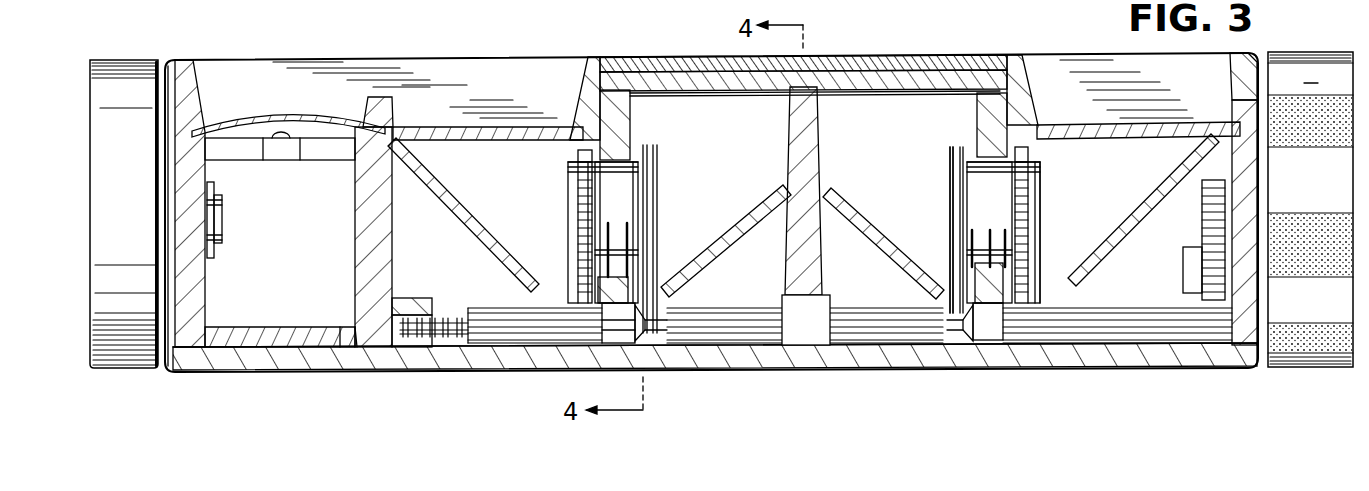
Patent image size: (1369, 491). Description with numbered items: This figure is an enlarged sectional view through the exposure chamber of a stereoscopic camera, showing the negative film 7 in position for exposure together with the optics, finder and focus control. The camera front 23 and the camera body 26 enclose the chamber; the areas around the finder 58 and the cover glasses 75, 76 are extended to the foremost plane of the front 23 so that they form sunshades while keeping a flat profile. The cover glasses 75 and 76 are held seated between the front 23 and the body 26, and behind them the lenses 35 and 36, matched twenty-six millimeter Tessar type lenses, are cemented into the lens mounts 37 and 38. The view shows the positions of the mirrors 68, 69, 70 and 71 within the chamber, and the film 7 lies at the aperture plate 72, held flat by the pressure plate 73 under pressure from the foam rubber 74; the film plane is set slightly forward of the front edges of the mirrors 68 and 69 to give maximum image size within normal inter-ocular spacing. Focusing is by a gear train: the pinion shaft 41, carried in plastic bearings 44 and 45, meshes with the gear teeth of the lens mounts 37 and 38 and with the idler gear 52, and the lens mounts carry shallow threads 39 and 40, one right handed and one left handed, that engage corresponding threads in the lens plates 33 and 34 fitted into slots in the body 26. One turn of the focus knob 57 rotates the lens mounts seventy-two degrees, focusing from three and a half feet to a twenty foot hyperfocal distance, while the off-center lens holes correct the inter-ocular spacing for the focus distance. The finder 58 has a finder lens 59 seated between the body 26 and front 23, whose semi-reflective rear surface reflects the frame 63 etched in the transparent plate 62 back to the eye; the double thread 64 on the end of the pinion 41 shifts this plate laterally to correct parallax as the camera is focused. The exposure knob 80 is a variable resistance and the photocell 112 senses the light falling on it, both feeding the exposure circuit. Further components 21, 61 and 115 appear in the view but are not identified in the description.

The negative film 7 is at (940, 86).
The housing 21 is at (835, 0).
The camera front 23 is at (200, 70).
The camera body 26 is at (203, 265).
The lens plate 33 is at (1025, 97).
The lens plate 34 is at (620, 108).
The lens 35 is at (1050, 203).
The lens 36 is at (557, 196).
The lens mount 37 is at (1040, 178).
The lens mount 38 is at (573, 232).
The thread 39 is at (980, 213).
The thread 40 is at (627, 212).
The pinion shaft 41 is at (1063, 317).
The plastic bearing 44 is at (993, 333).
The plastic bearing 45 is at (613, 337).
The idler gear 52 is at (1207, 280).
The focus knob 57 is at (1345, 60).
The camera finder 58 is at (320, 233).
The finder lens 59 is at (265, 120).
The partition wall 61 is at (382, 238).
The transparent plate 62 is at (258, 333).
The frame 63 is at (323, 330).
The double thread 64 is at (450, 320).
The mirror 68 is at (433, 157).
The mirror 69 is at (1180, 163).
The mirror 70 is at (858, 210).
The mirror 71 is at (737, 223).
The aperture plate 72 is at (953, 93).
The pressure plate 73 is at (697, 73).
The foam rubber 74 is at (653, 65).
The cover glass 75 is at (1200, 123).
The cover glass 76 is at (440, 127).
The exposure knob 80 is at (125, 62).
The photocell 112 is at (283, 152).
The block 115 is at (1185, 262).